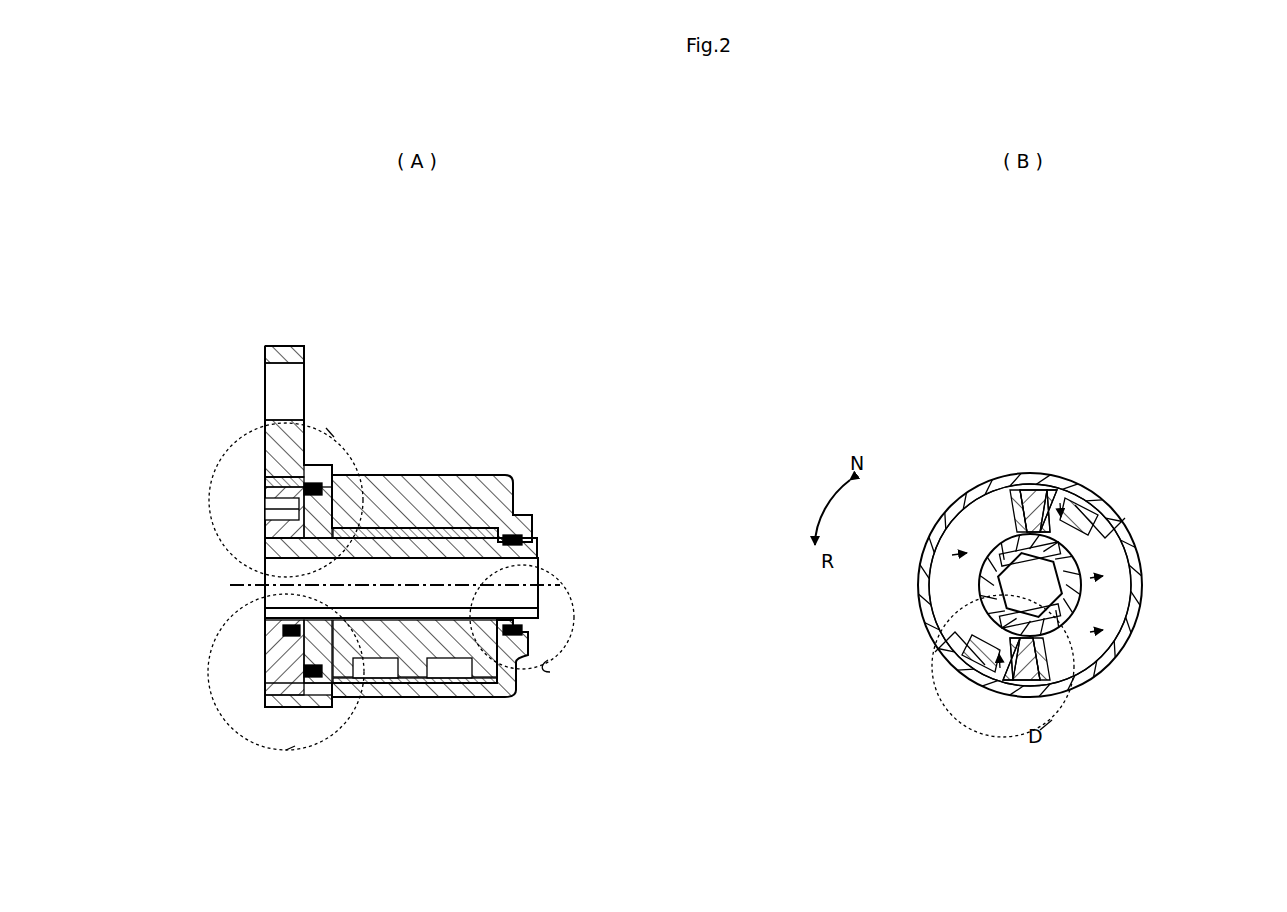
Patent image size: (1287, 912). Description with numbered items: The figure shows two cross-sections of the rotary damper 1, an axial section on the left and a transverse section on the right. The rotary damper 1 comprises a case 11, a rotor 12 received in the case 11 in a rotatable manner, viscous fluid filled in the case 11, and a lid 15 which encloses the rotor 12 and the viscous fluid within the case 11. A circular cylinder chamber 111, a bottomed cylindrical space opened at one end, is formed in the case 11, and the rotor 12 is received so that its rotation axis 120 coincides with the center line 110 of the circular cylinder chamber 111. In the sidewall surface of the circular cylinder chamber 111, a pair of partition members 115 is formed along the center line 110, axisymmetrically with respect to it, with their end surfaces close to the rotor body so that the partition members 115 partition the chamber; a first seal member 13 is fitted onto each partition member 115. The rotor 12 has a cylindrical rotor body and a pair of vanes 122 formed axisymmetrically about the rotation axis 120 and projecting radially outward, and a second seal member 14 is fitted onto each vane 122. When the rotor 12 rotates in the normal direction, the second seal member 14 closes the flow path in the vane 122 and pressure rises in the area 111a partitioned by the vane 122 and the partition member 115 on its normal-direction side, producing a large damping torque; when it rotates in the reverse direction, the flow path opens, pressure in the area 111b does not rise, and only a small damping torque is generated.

The rotary damper 1 is at (538, 262).
The case 11 is at (516, 480).
The rotor 12 is at (537, 543).
The first seal member 13 is at (412, 528).
The second seal member 14 is at (420, 690).
The lid 15 is at (300, 500).
The center line 110 is at (560, 585).
The rotation axis 120 is at (451, 566).
The circular cylinder chamber 111 is at (1097, 632).
The area 111a is at (960, 553).
The area 111b is at (1062, 505).
The partition member 115 is at (1027, 524).
The vane 122 is at (1105, 504).